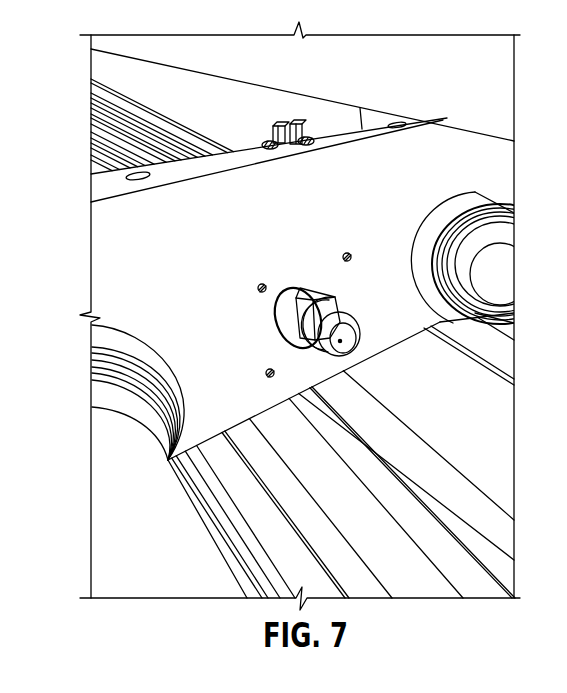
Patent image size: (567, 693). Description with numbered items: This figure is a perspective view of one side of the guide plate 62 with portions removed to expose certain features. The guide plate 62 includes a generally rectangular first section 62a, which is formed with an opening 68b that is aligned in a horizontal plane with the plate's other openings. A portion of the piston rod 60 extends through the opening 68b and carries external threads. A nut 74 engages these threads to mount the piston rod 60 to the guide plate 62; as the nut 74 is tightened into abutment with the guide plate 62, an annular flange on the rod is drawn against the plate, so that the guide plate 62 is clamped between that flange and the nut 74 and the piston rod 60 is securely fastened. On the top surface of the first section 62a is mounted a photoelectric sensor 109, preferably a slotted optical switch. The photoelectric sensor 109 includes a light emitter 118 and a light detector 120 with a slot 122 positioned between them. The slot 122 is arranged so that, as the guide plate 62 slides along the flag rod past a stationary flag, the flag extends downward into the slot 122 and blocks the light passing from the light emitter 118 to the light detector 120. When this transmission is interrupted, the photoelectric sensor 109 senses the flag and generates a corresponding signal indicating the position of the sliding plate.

The piston rod 60 is at (341, 342).
The guide plate 62 is at (161, 287).
The first section 62a is at (112, 232).
The opening 68b is at (293, 320).
The nut 74 is at (308, 295).
The photoelectric sensor 109 is at (292, 140).
The light emitter 118 is at (269, 135).
The light detector 120 is at (308, 131).
The slot 122 is at (284, 149).